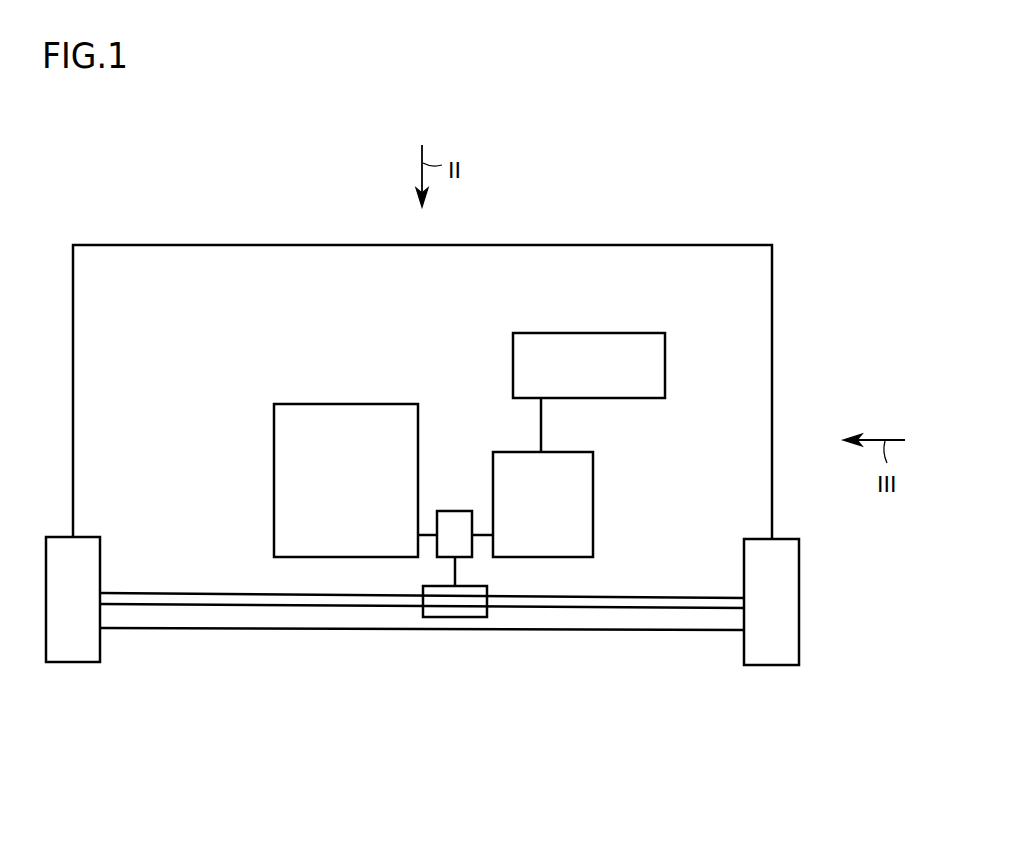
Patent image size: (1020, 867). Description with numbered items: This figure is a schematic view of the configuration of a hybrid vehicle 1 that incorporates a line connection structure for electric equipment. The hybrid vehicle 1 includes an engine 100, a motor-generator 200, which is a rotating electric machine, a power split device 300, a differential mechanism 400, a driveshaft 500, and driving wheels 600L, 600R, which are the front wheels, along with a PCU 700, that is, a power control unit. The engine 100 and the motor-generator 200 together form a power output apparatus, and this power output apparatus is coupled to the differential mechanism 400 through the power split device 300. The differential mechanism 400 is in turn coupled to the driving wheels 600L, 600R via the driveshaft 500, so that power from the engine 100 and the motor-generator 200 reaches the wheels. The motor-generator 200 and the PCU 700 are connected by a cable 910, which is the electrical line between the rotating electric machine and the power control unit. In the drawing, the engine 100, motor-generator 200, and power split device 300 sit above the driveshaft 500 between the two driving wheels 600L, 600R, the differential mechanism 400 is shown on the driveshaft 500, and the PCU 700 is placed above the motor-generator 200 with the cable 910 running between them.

The hybrid vehicle 1 is at (103, 165).
The engine 100 is at (335, 558).
The motor-generator 200 is at (543, 558).
The power split device 300 is at (437, 550).
The differential mechanism 400 is at (453, 618).
The driveshaft 500 is at (232, 605).
The driving wheel 600R is at (72, 663).
The driving wheel 600L is at (771, 666).
The PCU (Power Control Unit) 700 is at (666, 362).
The cable 910 is at (542, 426).